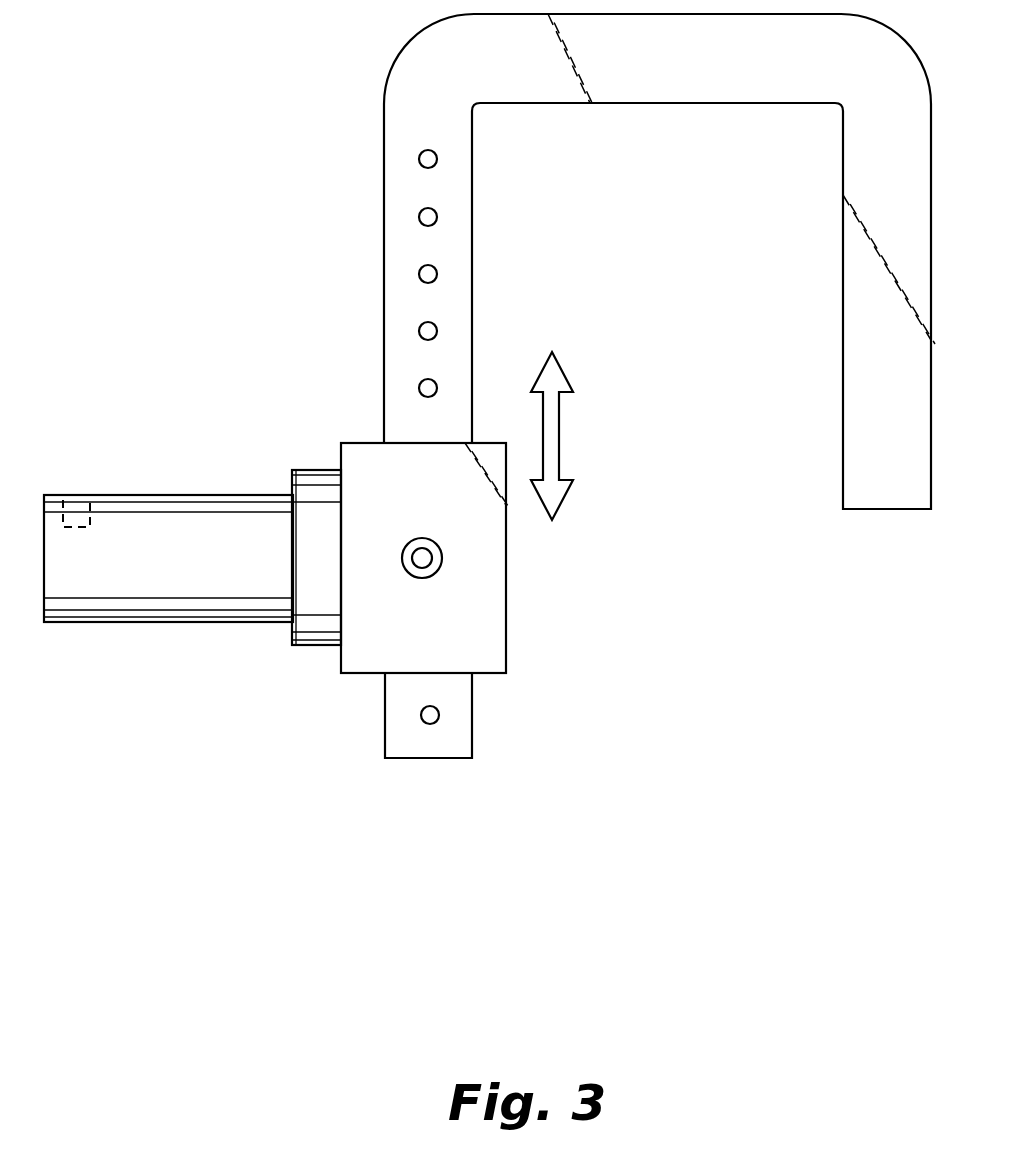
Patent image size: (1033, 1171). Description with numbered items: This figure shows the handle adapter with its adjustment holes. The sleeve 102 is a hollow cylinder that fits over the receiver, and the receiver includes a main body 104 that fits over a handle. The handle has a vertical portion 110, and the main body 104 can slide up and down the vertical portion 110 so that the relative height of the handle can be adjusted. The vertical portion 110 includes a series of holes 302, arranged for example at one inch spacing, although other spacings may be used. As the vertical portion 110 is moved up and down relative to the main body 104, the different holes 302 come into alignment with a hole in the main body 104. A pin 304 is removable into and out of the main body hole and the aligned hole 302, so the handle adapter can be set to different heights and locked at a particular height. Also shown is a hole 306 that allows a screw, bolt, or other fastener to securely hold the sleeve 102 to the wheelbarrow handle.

The vertical portion 110 is at (404, 355).
The holes 302 is at (438, 217).
The main body 104 is at (480, 641).
The pin 304 is at (442, 563).
The sleeve 102 is at (167, 600).
The hole 306 is at (82, 498).